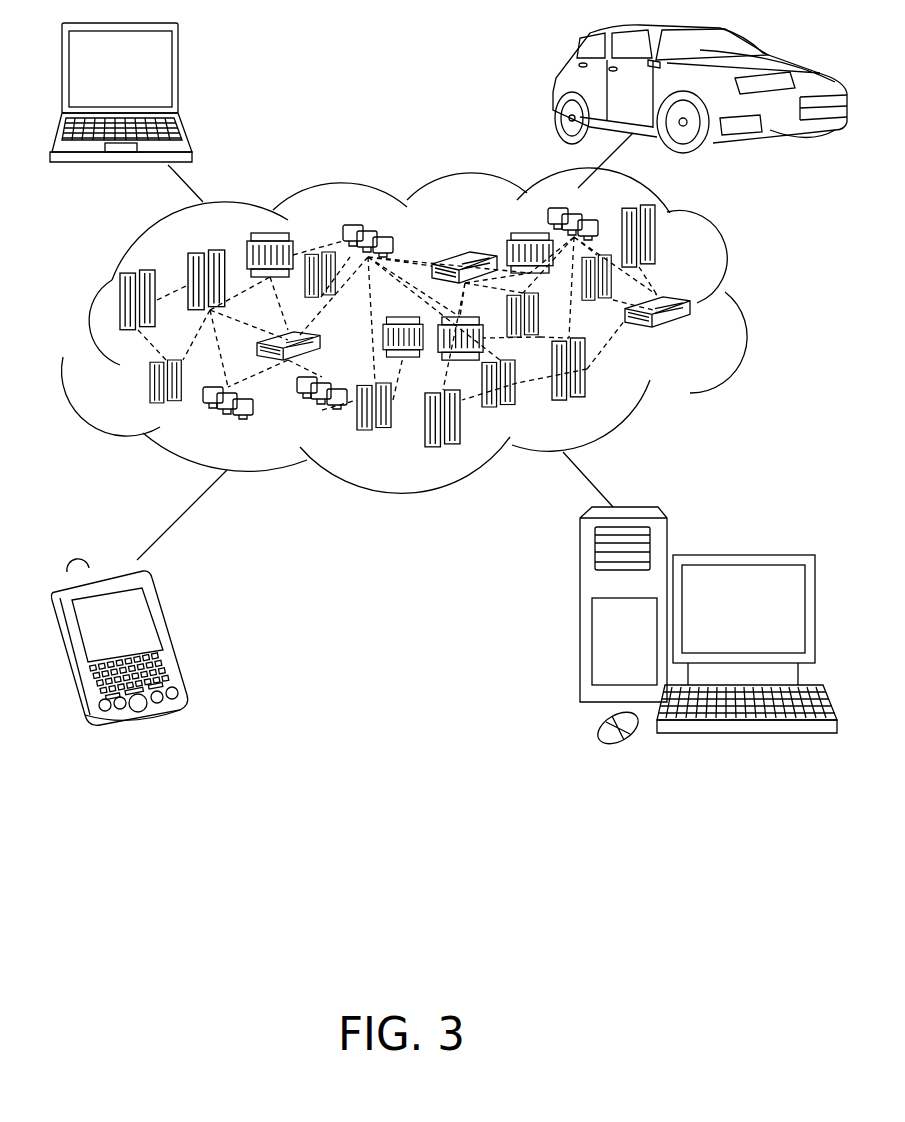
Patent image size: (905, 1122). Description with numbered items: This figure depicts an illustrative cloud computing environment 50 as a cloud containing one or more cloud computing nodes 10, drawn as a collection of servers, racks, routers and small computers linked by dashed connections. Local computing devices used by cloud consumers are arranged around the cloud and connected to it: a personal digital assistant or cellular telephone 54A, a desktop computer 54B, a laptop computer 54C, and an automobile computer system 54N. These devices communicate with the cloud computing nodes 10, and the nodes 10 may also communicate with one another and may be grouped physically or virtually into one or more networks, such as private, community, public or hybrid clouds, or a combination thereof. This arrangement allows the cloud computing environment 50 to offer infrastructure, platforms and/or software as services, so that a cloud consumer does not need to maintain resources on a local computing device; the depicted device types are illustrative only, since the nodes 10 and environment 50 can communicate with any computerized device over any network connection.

The cloud computing nodes 10 is at (689, 334).
The cloud computing environment 50 is at (740, 307).
The personal digital assistant (PDA) or cellular telephone 54A is at (171, 637).
The desktop computer 54B is at (742, 556).
The laptop computer 54C is at (180, 73).
The automobile computer system 54N is at (554, 84).